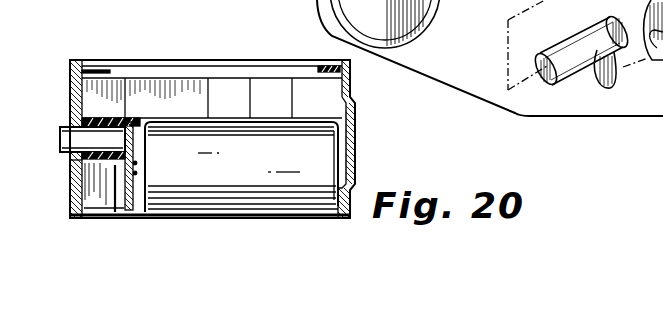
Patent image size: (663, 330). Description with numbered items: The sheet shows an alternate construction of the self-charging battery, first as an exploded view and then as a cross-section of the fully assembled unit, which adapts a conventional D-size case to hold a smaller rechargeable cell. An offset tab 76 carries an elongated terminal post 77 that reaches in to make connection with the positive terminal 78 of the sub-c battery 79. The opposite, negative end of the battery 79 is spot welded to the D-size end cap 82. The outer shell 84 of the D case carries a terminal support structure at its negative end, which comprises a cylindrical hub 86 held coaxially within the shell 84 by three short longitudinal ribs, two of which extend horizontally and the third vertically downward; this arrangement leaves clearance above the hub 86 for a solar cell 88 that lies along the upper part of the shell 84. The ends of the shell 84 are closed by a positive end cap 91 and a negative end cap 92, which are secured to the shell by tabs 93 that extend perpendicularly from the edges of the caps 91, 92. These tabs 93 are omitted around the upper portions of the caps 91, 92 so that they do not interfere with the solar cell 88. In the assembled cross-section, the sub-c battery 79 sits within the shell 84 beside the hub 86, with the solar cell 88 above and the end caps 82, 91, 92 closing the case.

In FIG. 20, the elongated terminal post 77 is at (61, 127).
In FIG. 19, the elongated terminal post 77 is at (565, 43).
In FIG. 20, the solar cell 88 is at (177, 97).
In FIG. 20, the outer shell 84 is at (201, 60).
In FIG. 20, the end cap 82 is at (354, 126).
In FIG. 20, the negative end cap 92 is at (354, 175).
In FIG. 20, the positive terminal 78 is at (137, 172).
In FIG. 19, the positive terminal 78 is at (656, 66).
In FIG. 20, the sub-c battery 79 is at (262, 174).
In FIG. 20, the positive end cap 91 is at (73, 157).
In FIG. 20, the cylindrical hub 86 is at (72, 178).
In FIG. 19, the tabs 93 is at (444, 12).
In FIG. 19, the offset tab 76 is at (602, 78).